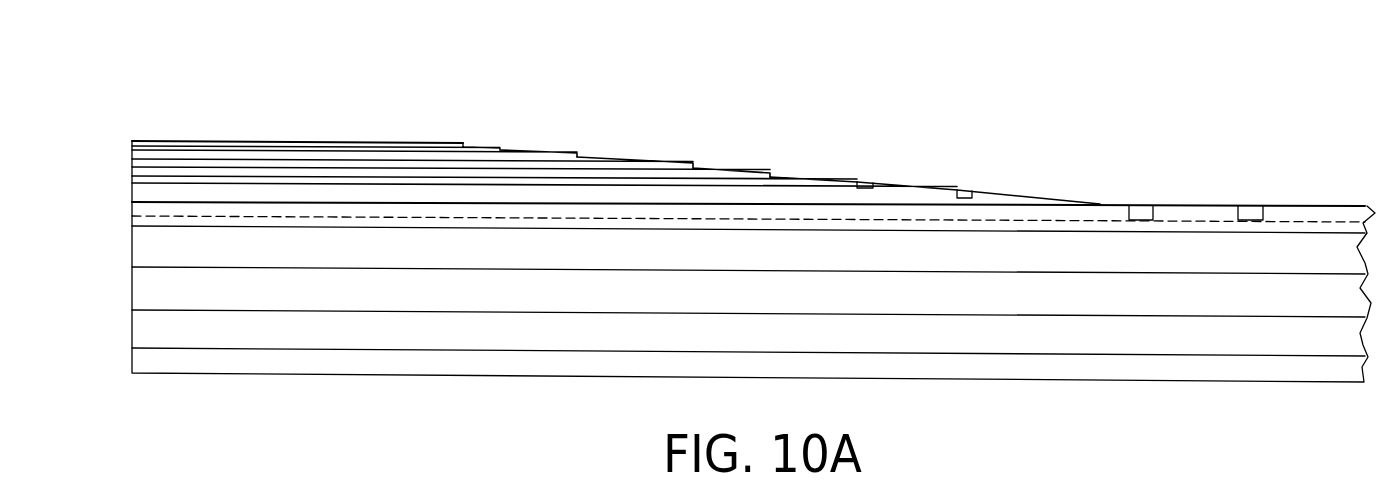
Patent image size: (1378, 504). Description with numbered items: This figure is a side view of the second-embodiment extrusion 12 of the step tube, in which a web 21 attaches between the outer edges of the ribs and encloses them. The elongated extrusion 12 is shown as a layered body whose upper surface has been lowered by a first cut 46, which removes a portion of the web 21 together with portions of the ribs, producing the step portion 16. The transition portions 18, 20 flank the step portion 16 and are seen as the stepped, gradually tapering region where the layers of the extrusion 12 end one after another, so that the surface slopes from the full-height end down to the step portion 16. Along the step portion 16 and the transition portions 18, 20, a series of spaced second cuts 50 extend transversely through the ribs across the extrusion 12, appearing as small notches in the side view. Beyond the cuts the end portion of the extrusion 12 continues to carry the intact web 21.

The extrusion 12 is at (160, 292).
The step portion 16 is at (1210, 205).
The transition portion 18 is at (818, 178).
The transition portion 20 is at (405, 150).
The web 21 is at (202, 142).
The first cut 46 is at (1102, 205).
The second cuts 50 is at (698, 165).